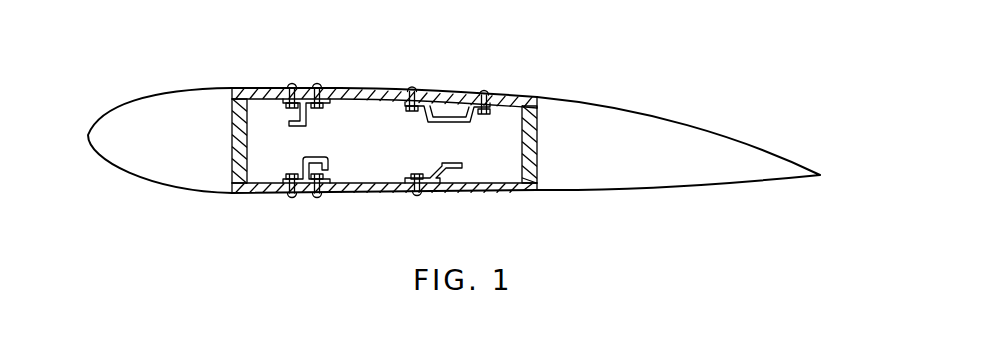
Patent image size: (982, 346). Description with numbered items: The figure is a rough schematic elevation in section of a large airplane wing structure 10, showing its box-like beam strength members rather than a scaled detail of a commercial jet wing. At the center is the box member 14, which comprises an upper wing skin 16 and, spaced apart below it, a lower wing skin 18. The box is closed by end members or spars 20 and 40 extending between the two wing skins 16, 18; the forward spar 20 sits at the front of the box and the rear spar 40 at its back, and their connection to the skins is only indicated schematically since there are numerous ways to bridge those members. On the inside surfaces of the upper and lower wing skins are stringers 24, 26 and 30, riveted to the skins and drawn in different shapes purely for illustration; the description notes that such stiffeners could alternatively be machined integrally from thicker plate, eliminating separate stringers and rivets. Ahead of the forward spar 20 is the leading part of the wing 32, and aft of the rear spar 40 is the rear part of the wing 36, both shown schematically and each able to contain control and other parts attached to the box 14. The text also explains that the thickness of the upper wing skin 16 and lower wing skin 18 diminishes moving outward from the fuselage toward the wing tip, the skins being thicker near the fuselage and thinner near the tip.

The wing structure 10 is at (593, 46).
The box member 14 is at (265, 88).
The upper wing skin 16 is at (346, 88).
The lower wing skin 18 is at (336, 193).
The end member or spar 20 is at (240, 142).
The stringer 24 is at (308, 122).
The stringer 26 is at (450, 114).
The stringer 30 is at (448, 163).
The leading part of the wing 32 is at (103, 125).
The rear part of the wing 36 is at (713, 134).
The end member or spar 40 is at (538, 141).